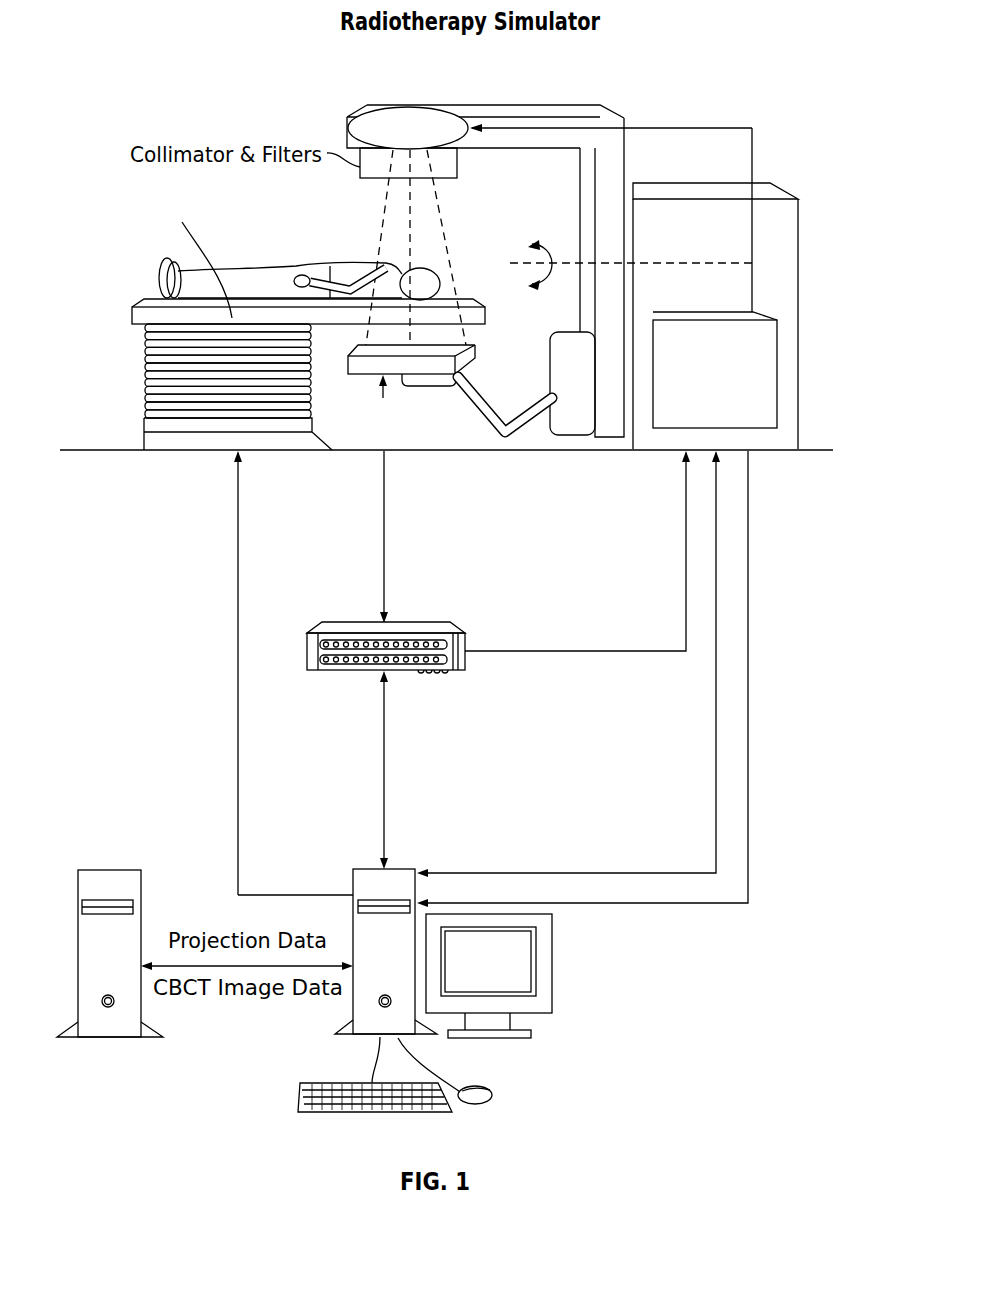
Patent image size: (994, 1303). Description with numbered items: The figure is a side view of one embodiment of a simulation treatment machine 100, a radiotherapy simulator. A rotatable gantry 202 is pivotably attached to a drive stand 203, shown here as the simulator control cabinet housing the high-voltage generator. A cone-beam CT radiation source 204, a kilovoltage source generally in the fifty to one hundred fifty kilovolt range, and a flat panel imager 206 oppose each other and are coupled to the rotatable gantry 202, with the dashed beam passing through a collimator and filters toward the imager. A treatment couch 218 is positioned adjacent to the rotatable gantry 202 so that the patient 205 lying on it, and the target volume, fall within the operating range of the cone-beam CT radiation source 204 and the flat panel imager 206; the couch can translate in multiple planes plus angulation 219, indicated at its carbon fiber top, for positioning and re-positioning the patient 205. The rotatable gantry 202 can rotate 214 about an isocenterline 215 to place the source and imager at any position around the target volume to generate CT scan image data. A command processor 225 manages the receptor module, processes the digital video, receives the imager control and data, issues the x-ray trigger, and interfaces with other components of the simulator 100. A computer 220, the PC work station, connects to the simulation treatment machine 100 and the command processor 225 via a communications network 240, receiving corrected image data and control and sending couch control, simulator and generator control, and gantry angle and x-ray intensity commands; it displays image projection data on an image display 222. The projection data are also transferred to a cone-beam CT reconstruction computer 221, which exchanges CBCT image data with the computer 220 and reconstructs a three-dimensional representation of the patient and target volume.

The simulation treatment machine 100 is at (225, 46).
The rotatable gantry 202 is at (570, 113).
The drive stand 203 is at (760, 190).
The cone-beam CT radiation source 204 is at (413, 107).
The patient 205 is at (348, 272).
The flat panel imager 206 is at (425, 386).
The rotation 214 is at (535, 244).
The isocenterline 215 is at (533, 282).
The treatment couch 218 is at (121, 280).
The angulation 219 is at (138, 318).
The computer 220 is at (372, 868).
The cone-beam CT reconstruction computer 221 is at (108, 870).
The image display 222 is at (553, 940).
The command processor 225 is at (358, 624).
The communications network 240 is at (240, 538).